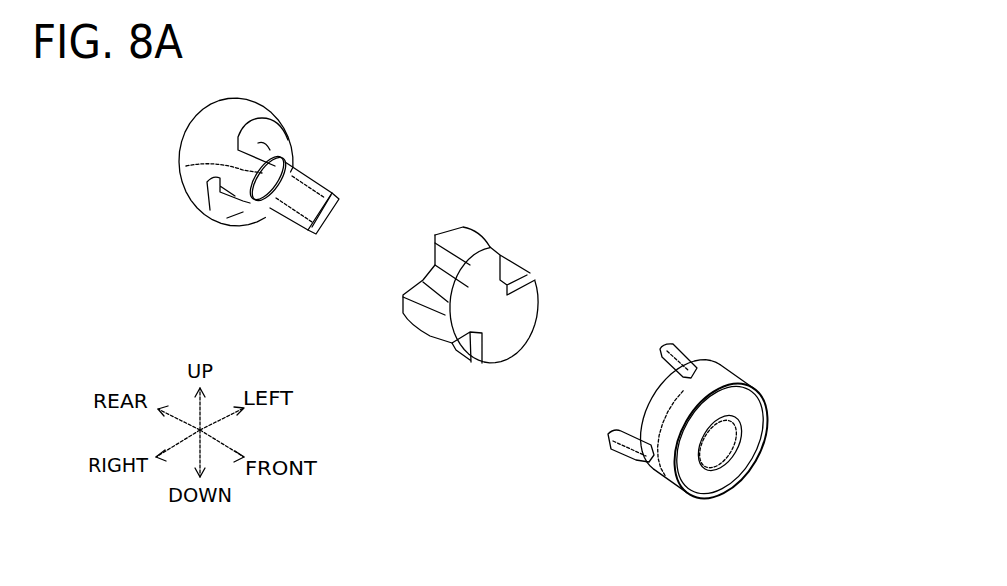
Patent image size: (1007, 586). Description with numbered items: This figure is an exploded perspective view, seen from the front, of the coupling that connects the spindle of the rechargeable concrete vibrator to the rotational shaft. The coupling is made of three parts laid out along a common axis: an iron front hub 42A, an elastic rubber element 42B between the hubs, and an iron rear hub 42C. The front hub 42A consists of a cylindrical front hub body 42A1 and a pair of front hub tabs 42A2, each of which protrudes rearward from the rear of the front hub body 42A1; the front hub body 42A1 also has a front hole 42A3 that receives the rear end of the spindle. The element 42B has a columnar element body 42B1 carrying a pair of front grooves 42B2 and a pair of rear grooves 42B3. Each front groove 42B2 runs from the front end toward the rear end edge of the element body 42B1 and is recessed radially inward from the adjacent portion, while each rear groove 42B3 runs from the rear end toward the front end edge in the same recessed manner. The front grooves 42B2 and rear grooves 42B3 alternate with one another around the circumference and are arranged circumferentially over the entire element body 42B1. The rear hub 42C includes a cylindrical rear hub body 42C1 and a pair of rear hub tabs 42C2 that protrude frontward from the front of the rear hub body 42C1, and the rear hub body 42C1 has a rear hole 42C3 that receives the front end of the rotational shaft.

The front hub 42A is at (708, 418).
The front hub body 42A1 is at (670, 480).
The front hub tab 42A2 is at (683, 333).
The front hole 42A3 is at (728, 443).
The element 42B is at (475, 288).
The element body 42B1 is at (513, 327).
The front groove 42B2 is at (485, 218).
The rear groove 42B3 is at (432, 270).
The rear hub 42C is at (232, 163).
The rear hub body 42C1 is at (200, 140).
The rear hub tab 42C2 is at (186, 166).
The rear hole 42C3 is at (243, 200).